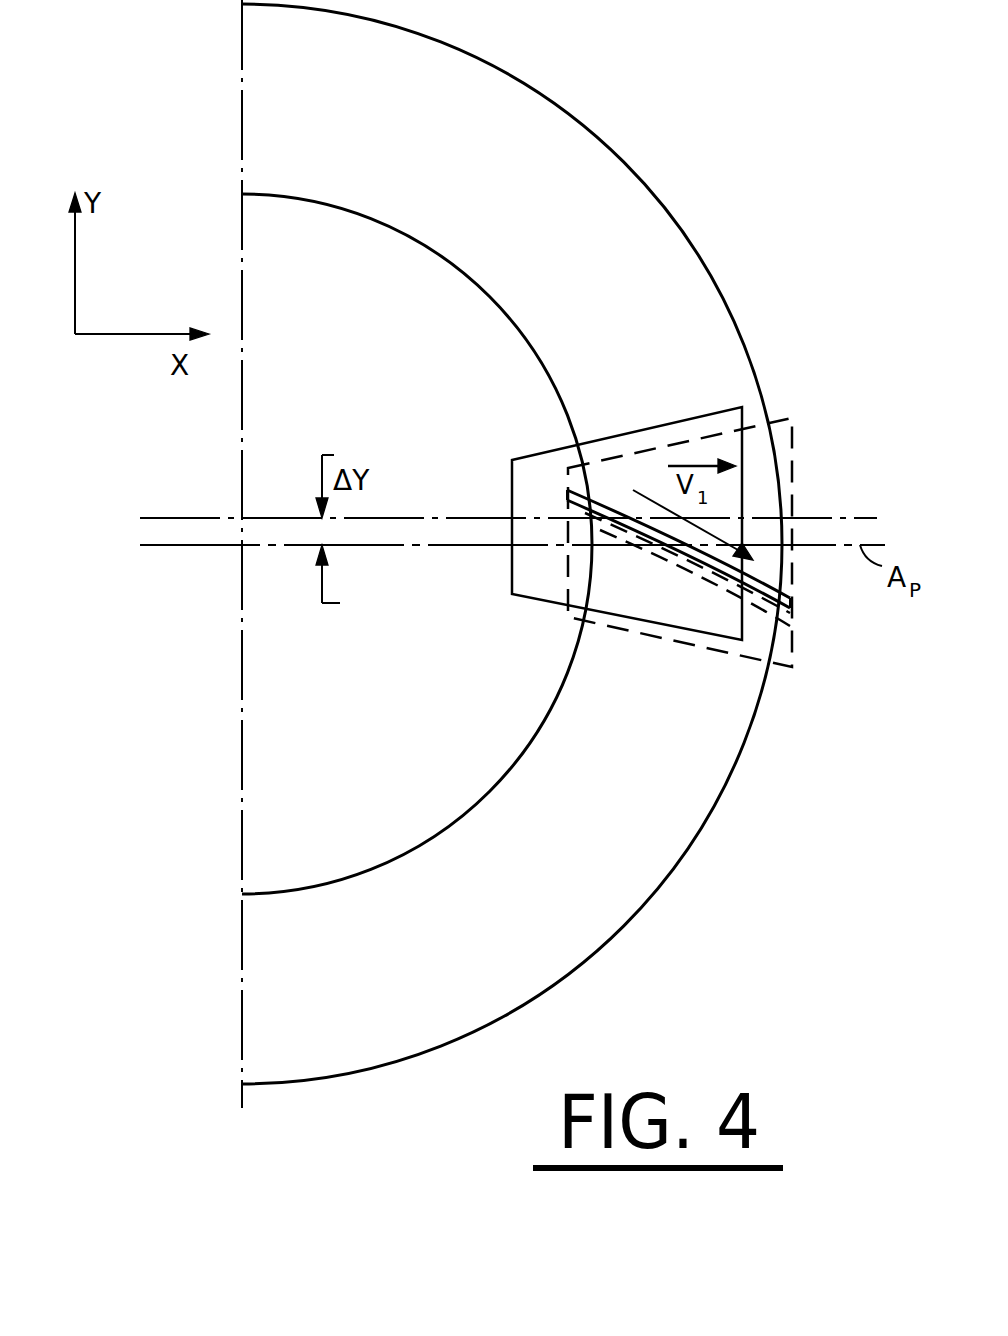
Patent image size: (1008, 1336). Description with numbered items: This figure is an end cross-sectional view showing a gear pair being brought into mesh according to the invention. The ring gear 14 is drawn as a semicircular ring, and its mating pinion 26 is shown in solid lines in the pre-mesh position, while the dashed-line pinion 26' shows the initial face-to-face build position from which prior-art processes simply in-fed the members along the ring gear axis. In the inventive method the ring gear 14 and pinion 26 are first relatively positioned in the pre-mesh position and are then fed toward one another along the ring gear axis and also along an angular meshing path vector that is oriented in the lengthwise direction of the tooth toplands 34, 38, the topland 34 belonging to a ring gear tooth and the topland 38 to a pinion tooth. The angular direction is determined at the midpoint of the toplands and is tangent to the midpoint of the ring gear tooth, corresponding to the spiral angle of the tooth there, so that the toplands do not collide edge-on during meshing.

The ring gear 14 is at (598, 168).
The pinion 26 is at (602, 523).
The pinion in initial aligned position 26' is at (738, 538).
The topland of ring gear tooth 34 is at (770, 590).
The topland of pinion tooth 38 is at (790, 657).